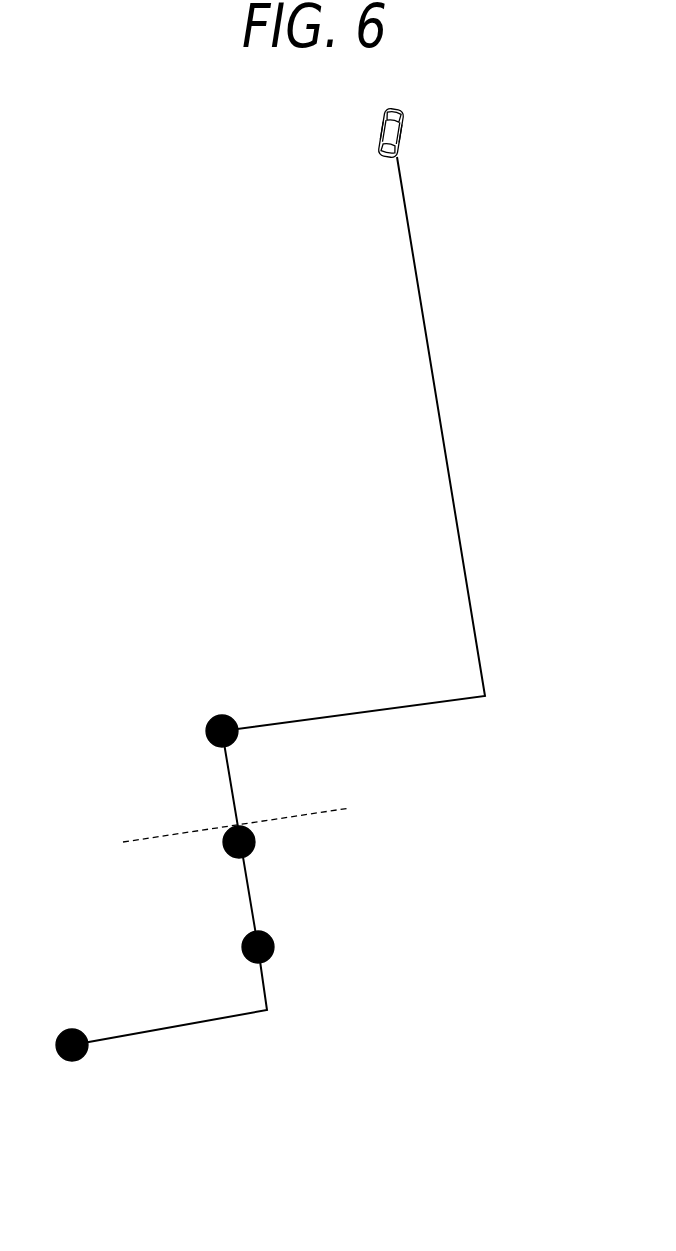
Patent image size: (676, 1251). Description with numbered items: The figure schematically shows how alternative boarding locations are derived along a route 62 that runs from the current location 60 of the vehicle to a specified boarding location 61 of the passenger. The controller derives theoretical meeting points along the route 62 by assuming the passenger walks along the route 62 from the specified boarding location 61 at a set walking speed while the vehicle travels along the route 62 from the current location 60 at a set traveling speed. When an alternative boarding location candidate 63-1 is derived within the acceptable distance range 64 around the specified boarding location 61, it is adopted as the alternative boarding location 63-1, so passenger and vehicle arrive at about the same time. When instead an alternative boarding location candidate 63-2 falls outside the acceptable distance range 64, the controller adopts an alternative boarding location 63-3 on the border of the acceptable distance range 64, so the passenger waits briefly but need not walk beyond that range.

The current location 60 is at (399, 132).
The specified boarding location 61 is at (78, 1061).
The route 62 is at (447, 473).
The alternative boarding location candidate 63-1 is at (274, 950).
The alternative boarding location candidate 63-2 is at (222, 716).
The alternative boarding location 63-3 is at (251, 852).
The acceptable distance range 64 is at (350, 808).